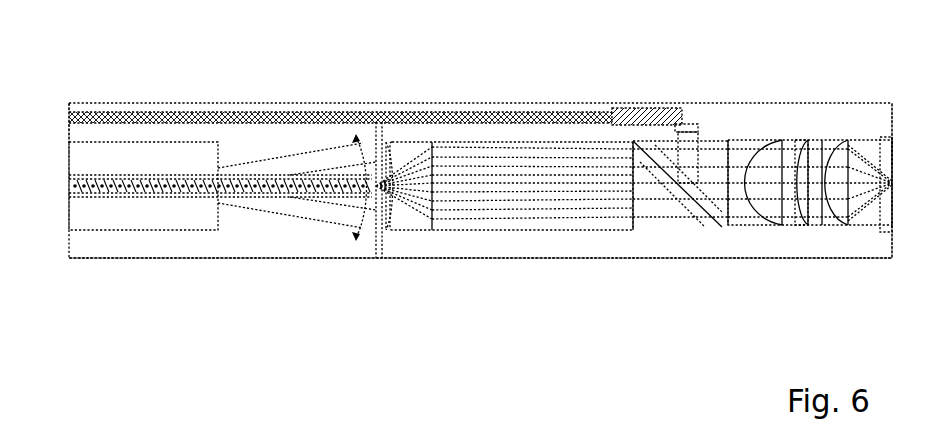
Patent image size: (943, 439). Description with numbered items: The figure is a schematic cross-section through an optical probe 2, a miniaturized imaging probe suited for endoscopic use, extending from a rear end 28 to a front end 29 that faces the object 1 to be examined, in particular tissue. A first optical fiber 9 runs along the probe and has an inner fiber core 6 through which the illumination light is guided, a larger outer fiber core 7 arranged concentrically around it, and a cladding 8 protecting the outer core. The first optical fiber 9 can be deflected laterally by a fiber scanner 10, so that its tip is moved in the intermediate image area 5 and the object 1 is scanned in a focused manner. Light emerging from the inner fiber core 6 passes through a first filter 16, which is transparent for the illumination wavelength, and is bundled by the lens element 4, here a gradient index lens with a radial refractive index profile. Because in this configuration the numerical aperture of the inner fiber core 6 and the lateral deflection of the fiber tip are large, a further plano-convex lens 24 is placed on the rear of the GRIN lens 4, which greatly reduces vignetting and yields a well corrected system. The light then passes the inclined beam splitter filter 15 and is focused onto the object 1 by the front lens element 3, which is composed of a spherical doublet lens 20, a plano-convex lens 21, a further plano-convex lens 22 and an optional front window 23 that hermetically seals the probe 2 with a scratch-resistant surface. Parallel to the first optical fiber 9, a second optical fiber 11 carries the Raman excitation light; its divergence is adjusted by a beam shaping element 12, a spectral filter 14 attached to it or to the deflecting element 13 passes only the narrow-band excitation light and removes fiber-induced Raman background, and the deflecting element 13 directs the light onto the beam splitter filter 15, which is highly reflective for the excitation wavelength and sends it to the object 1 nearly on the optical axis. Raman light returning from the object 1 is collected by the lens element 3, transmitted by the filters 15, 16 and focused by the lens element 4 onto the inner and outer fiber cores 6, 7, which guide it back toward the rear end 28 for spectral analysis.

The object 1 is at (896, 225).
The optical probe 2 is at (863, 258).
The lens element 3 is at (827, 126).
The lens element 4 is at (520, 230).
The intermediate image area 5 is at (377, 238).
The inner fiber core 6 is at (267, 200).
The outer fiber core 7 is at (282, 200).
The cladding 8 is at (297, 200).
The first optical fiber 9 is at (220, 269).
The fiber scanner 10 is at (128, 215).
The second optical fiber 11 is at (253, 108).
The beam shaping element 12 is at (626, 108).
The deflecting element 13 is at (685, 124).
The spectral filter 14 is at (699, 135).
The beam splitter filter 15 is at (723, 224).
The first filter 16 is at (390, 238).
The spherical doublet lens 20 is at (750, 140).
The plano-convex lens 21 is at (812, 140).
The plano-convex lens 22 is at (850, 140).
The front window 23 is at (878, 137).
The plano-convex lens 24 is at (405, 150).
The rear end 28 is at (73, 132).
The front end 29 is at (909, 128).